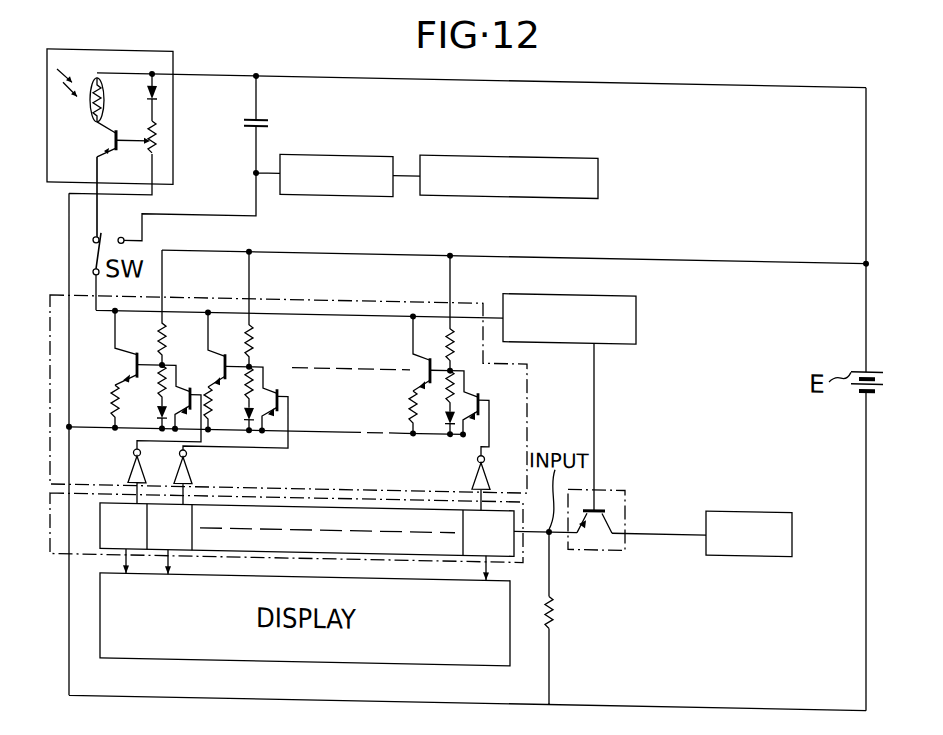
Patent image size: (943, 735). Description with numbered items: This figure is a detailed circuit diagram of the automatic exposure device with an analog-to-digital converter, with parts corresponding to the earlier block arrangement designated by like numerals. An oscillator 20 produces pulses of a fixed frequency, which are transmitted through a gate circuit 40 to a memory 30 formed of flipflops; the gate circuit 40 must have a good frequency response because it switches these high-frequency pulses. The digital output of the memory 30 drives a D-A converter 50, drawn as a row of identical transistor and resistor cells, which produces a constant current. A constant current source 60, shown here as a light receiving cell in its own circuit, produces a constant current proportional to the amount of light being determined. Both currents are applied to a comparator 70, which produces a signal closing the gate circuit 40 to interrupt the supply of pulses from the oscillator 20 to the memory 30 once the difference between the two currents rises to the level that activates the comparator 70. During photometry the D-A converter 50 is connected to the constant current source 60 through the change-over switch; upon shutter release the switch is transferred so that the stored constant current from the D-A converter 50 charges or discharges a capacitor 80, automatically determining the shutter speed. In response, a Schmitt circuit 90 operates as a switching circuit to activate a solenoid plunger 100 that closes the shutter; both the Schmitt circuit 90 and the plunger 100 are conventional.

The oscillator 20 is at (748, 498).
The memory 30 is at (50, 538).
The gate circuit 40 is at (625, 505).
The D-A converter 50 is at (527, 362).
The constant current source 60 is at (150, 47).
The comparator 70 is at (636, 298).
The capacitor 80 is at (274, 112).
The Schmitt circuit 90 is at (393, 128).
The solenoid plunger 100 is at (538, 126).